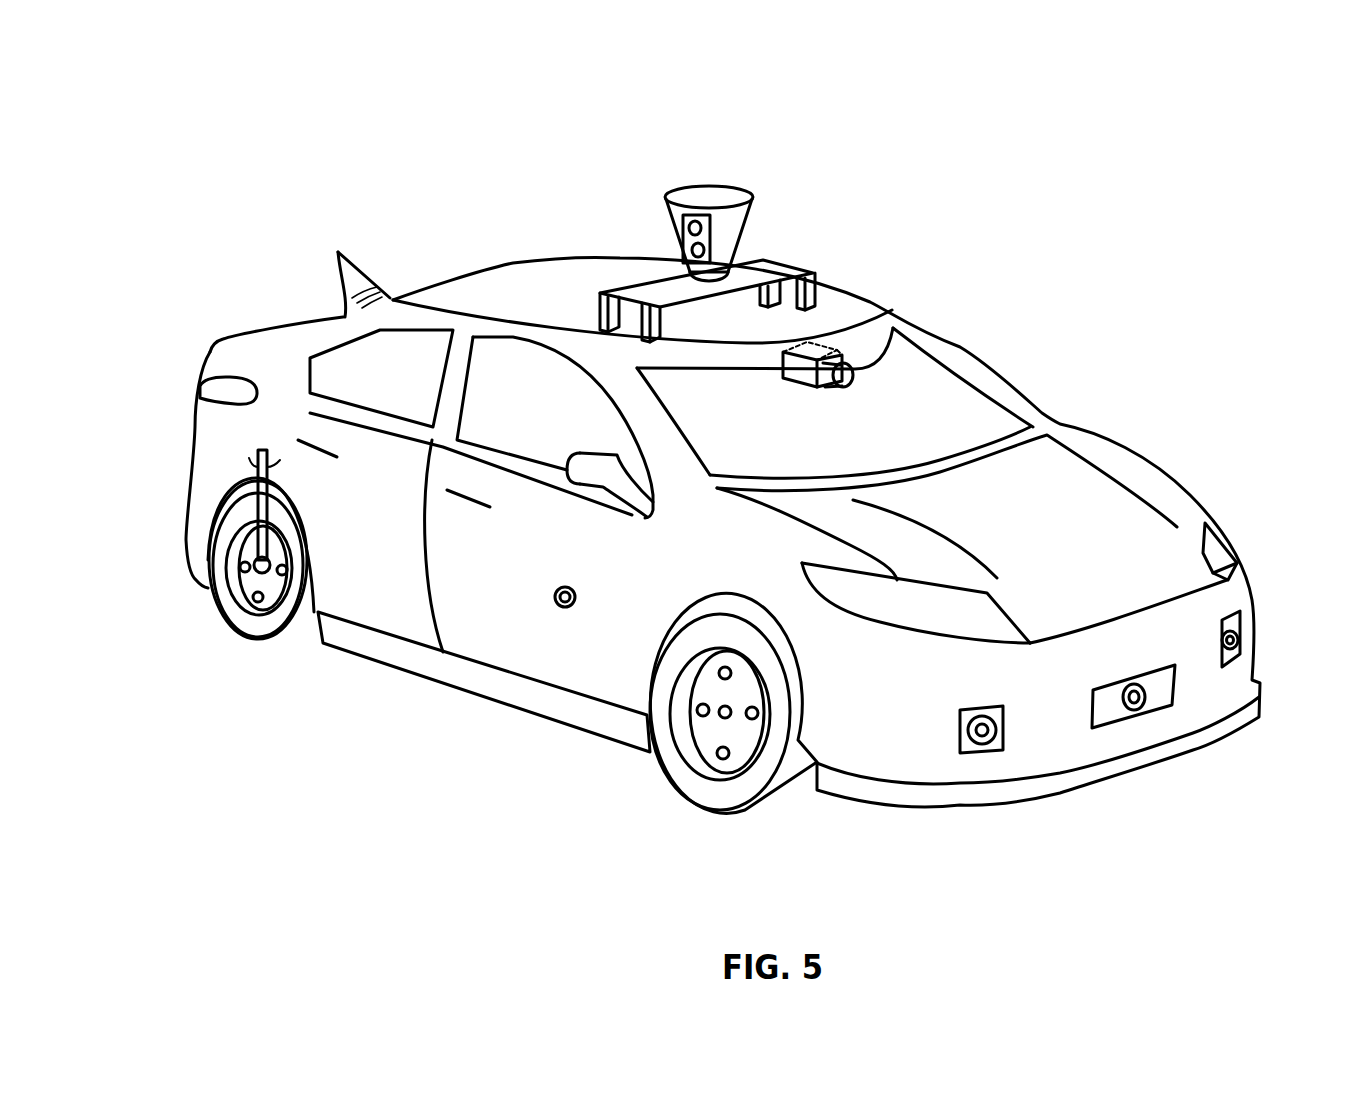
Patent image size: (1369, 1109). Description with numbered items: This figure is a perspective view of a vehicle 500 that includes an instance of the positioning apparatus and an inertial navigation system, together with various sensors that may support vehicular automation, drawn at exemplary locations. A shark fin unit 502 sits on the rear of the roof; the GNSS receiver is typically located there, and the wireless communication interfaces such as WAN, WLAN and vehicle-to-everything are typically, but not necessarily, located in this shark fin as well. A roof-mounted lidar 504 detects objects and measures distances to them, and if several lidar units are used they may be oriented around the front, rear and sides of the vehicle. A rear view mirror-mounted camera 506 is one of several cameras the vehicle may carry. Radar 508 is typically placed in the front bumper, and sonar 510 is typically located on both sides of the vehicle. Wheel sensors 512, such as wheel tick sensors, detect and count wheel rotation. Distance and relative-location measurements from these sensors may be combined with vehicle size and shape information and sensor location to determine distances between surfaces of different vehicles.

The vehicle 500 is at (1045, 398).
The GNSS wireless receiver / wireless communication transceiver(s) 502 is at (367, 270).
The lidar 504 is at (680, 235).
The rear view mirror-mounted camera 506 is at (798, 387).
The radar 508 is at (1110, 728).
The sonar 510 is at (553, 598).
The wheel sensors 512 is at (253, 585).